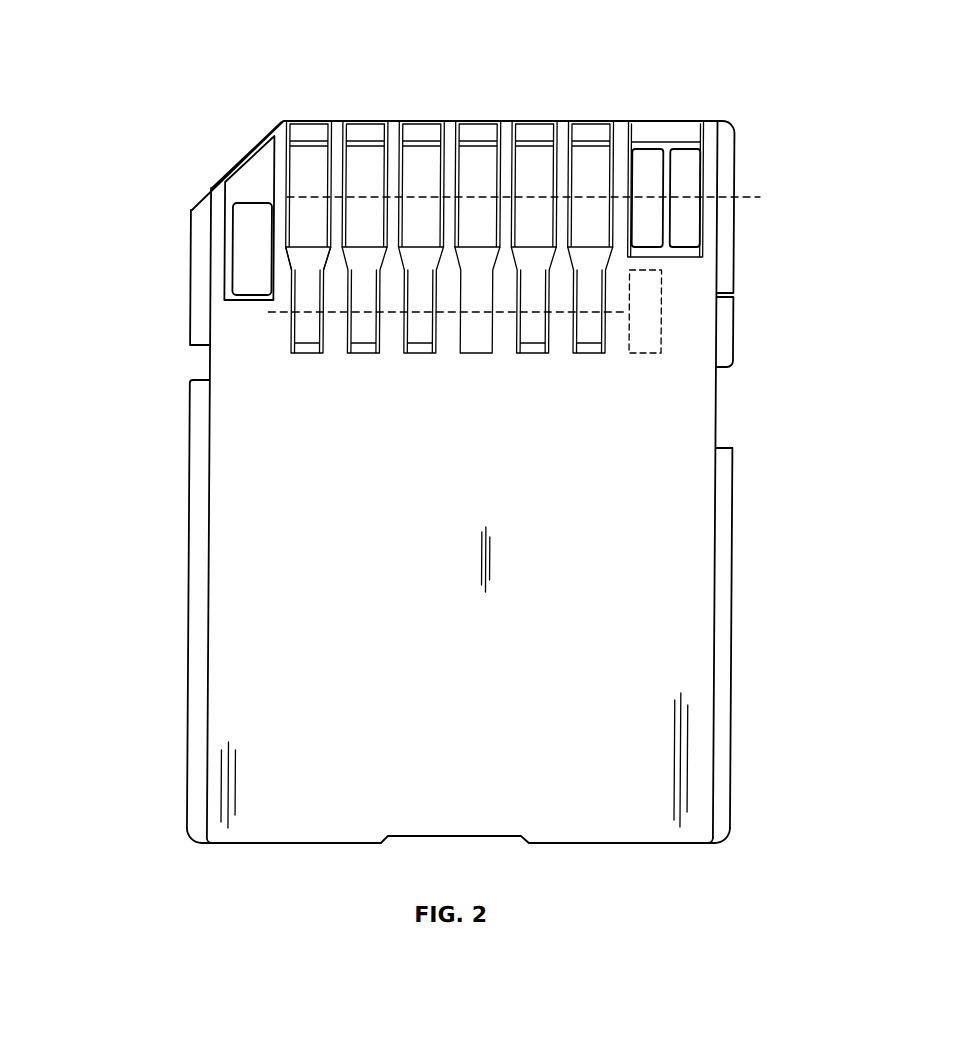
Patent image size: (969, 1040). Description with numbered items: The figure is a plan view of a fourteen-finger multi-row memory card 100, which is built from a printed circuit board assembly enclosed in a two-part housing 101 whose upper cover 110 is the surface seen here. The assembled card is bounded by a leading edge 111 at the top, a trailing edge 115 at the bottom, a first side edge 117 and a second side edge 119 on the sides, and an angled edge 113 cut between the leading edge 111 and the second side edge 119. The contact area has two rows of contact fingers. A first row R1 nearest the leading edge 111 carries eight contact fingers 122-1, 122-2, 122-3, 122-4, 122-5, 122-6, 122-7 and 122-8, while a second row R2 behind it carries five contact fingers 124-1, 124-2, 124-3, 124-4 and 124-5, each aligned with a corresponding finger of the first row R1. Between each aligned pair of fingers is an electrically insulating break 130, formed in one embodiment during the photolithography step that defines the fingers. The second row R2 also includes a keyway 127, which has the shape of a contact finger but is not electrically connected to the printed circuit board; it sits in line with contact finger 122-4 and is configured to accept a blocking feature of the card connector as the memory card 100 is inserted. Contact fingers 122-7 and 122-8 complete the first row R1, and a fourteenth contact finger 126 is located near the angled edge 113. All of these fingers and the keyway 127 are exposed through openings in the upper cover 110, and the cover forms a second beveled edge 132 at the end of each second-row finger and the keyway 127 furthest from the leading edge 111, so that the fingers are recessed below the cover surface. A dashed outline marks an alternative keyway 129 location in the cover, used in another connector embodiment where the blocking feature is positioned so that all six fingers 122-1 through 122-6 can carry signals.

The memory card 100 is at (434, 465).
The housing 101 is at (465, 484).
The upper cover 110 is at (703, 797).
The leading edge 111 is at (337, 121).
The angled edge 113 is at (212, 187).
The trailing edge 115 is at (650, 843).
The first side edge 117 is at (735, 563).
The second side edge 119 is at (190, 618).
The contact finger 122-1 is at (312, 160).
The contact finger 122-2 is at (365, 145).
The contact finger 122-3 is at (422, 145).
The contact finger 122-4 is at (478, 145).
The contact finger 122-5 is at (537, 145).
The contact finger 122-6 is at (595, 145).
The contact finger 122-7 is at (655, 178).
The contact finger 122-8 is at (688, 232).
The contact finger 124-1 is at (307, 332).
The contact finger 124-2 is at (363, 332).
The contact finger 124-3 is at (420, 332).
The contact finger 124-4 is at (533, 332).
The contact finger 124-5 is at (590, 332).
The fourteenth contact finger 126 is at (253, 215).
The keyway 127 is at (477, 332).
The keyway 129 is at (662, 335).
The electrically insulating break 130 is at (308, 257).
The second beveled edge 132 is at (600, 350).
The first row R1 is at (543, 197).
The second row R2 is at (280, 316).